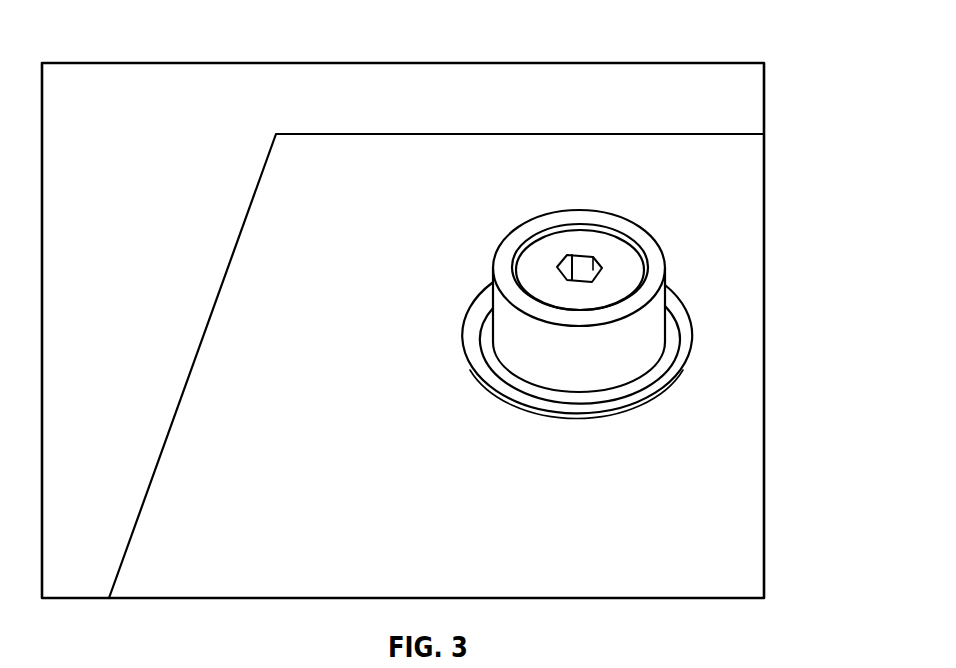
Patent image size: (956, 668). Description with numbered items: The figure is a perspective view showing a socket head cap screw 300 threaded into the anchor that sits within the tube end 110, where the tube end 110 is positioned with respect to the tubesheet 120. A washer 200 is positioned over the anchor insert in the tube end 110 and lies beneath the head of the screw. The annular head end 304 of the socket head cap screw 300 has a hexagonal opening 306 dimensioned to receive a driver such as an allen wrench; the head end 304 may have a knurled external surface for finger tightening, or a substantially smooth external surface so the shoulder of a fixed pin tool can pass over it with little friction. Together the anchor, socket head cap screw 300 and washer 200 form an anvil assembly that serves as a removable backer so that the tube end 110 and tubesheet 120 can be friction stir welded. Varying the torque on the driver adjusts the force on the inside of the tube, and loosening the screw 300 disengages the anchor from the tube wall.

The tubesheet 120 is at (722, 484).
The tube end 110 is at (665, 373).
The washer 200 is at (668, 333).
The socket head cap screw 300 is at (665, 313).
The annular head end 304 is at (489, 300).
The hexagonal opening 306 is at (588, 240).